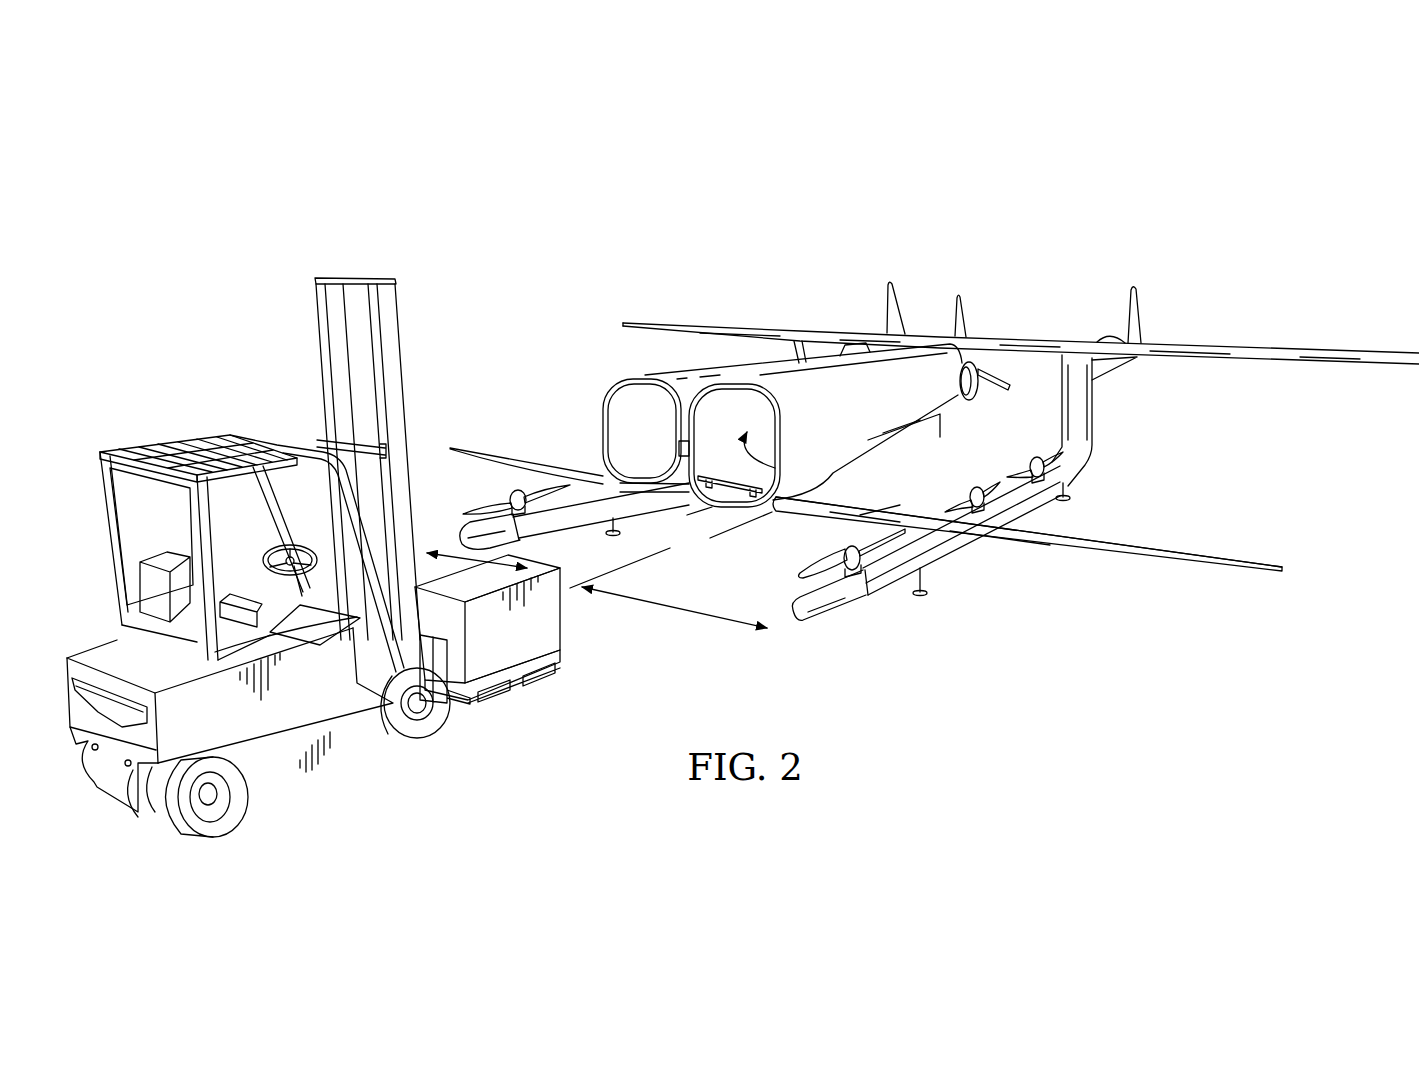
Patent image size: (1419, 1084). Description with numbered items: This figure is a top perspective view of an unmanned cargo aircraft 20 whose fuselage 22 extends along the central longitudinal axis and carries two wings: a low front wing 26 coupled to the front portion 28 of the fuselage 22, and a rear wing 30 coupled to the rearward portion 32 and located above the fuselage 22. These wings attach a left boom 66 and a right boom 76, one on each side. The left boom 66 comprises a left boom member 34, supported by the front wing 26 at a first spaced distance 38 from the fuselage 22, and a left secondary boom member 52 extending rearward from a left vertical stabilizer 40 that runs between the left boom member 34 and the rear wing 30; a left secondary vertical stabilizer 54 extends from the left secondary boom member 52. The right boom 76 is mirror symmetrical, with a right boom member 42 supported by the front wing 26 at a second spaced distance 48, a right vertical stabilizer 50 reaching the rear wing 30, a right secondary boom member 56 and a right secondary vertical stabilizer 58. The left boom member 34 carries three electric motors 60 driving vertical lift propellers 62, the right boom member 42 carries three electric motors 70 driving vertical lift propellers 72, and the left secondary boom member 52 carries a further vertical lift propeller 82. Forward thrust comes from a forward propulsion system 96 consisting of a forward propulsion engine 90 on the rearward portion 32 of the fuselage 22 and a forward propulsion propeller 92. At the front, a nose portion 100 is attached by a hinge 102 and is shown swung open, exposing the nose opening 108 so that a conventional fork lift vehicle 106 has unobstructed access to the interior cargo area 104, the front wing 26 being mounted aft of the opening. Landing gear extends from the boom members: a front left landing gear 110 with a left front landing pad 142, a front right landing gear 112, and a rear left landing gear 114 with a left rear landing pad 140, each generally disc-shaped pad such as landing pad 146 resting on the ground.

The aircraft 20 is at (742, 224).
The fuselage 22 is at (845, 410).
The front wing 26 is at (543, 463).
The front portion 28 is at (760, 386).
The rear wing 30 is at (672, 318).
The rearward portion 32 is at (947, 356).
The left boom member 34 is at (828, 637).
The first spaced distance 38 is at (675, 607).
The left vertical stabilizer 40 is at (1080, 412).
The right boom member 42 is at (446, 534).
The second spaced distance 48 is at (470, 563).
The right vertical stabilizer 50 is at (810, 350).
The left secondary boom member 52 is at (1098, 363).
The left secondary vertical stabilizer 54 is at (1138, 310).
The right secondary boom member 56 is at (853, 350).
The right secondary vertical stabilizer 58 is at (898, 302).
The electric motors 60 is at (977, 487).
The vertical lift propellers 62 is at (1023, 468).
The left boom 66 is at (962, 550).
The electric motors 70 is at (520, 494).
The vertical lift propellers 72 is at (475, 512).
The right boom 76 is at (497, 487).
The vertical lift propeller 82 is at (1103, 336).
The forward propulsion engine 90 is at (960, 378).
The forward propulsion propeller 92 is at (994, 366).
The forward propulsion system 96 is at (1007, 366).
The nose portion 100 is at (620, 380).
The hinge 102 is at (679, 448).
The interior cargo area 104 is at (772, 468).
The fork lift vehicle 106 is at (353, 742).
The nose opening 108 is at (713, 392).
The front left landing gear 110 is at (935, 580).
The front right landing gear 112 is at (627, 524).
The rear left landing gear 114 is at (1078, 489).
The left rear landing pad 140 is at (1070, 498).
The left front landing pad 142 is at (920, 598).
The landing pad 146 is at (613, 540).